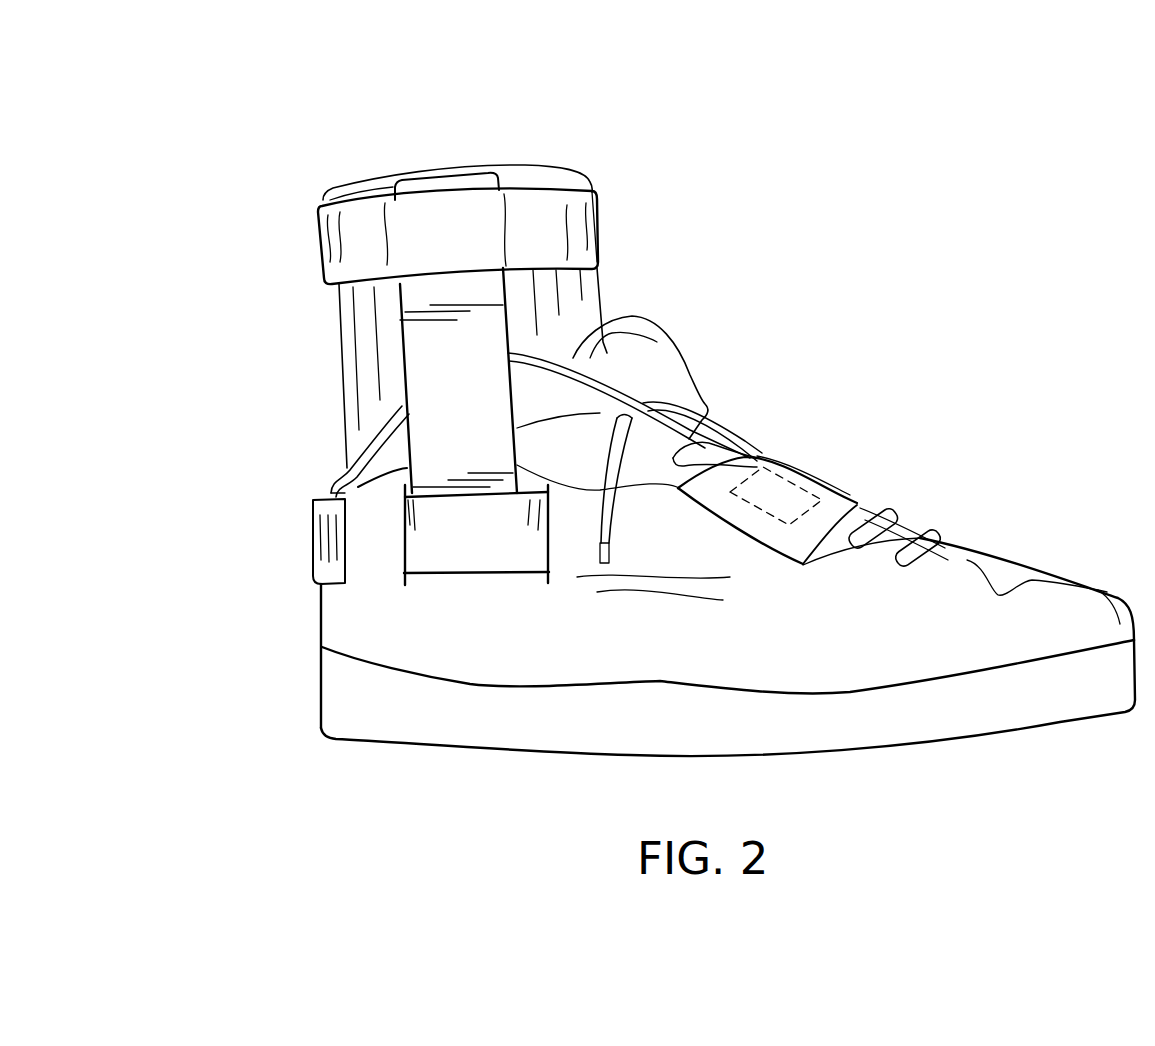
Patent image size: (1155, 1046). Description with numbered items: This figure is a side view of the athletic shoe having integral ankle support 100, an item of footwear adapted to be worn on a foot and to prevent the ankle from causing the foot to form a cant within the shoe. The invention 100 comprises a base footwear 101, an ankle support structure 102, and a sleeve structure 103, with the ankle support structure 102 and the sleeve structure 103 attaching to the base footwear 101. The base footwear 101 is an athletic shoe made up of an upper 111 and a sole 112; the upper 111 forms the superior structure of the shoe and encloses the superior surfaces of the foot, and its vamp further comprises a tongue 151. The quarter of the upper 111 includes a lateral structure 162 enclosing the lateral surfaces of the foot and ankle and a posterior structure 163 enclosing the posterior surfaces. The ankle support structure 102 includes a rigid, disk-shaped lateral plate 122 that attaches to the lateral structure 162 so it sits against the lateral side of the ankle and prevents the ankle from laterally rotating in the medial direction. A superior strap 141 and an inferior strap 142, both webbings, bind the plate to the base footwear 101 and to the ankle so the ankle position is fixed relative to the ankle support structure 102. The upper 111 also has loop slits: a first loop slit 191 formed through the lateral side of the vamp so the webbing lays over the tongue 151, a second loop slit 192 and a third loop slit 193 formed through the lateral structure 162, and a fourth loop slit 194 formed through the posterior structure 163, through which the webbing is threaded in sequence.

The athletic shoe having integral ankle support 100 is at (226, 123).
The base footwear 101 is at (983, 547).
The ankle support structure 102 is at (517, 176).
The sleeve structure 103 is at (595, 297).
The upper 111 is at (1110, 587).
The sole 112 is at (1060, 723).
The lateral plate 122 is at (447, 326).
The superior strap 141 is at (362, 223).
The inferior strap 142 is at (850, 500).
The tongue 151 is at (663, 375).
The lateral structure 162 is at (368, 615).
The posterior structure 163 is at (317, 600).
The first loop slit 191 is at (757, 543).
The second loop slit 192 is at (549, 535).
The third loop slit 193 is at (405, 518).
The fourth loop slit 194 is at (344, 540).